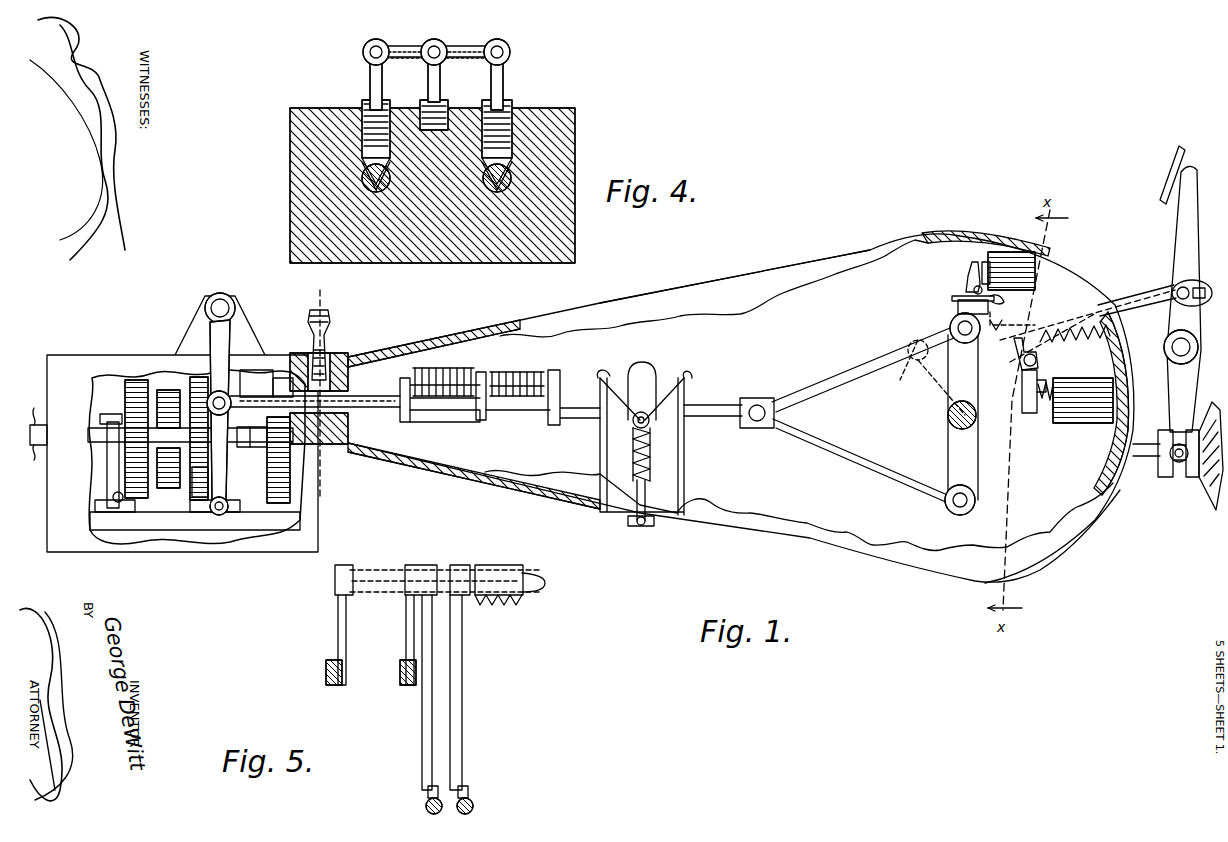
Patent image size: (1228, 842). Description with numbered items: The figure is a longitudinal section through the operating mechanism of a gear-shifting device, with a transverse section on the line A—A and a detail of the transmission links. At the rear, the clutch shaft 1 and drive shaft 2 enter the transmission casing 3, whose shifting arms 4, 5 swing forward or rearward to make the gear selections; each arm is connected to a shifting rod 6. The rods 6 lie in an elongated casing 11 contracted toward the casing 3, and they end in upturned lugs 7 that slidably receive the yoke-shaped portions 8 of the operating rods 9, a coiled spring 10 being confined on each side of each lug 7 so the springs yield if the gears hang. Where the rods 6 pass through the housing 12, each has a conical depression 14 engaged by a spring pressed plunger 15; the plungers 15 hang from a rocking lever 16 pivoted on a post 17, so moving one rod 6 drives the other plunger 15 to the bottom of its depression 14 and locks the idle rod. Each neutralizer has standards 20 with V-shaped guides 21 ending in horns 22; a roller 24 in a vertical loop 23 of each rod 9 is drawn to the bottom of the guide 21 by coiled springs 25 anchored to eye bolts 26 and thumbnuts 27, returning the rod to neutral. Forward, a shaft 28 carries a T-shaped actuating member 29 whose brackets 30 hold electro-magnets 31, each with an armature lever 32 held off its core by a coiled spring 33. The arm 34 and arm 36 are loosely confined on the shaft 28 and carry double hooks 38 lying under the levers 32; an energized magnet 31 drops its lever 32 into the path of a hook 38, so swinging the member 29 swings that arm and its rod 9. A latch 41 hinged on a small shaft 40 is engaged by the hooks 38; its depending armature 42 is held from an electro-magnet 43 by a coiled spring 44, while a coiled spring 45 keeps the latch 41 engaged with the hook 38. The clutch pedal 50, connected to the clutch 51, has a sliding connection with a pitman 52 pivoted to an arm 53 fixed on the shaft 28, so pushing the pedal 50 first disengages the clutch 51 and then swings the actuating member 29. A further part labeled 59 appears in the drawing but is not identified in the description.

In FIG. 1, the clutch shaft 1 is at (1150, 445).
In FIG. 1, the drive shaft 2 is at (34, 415).
In FIG. 1, the transmission casing 3 is at (80, 356).
In FIG. 1, the transmission shifting arm 4 is at (226, 337).
In FIG. 5, the transmission shifting arm 4 is at (336, 624).
In FIG. 5, the transmission shifting arm 5 is at (404, 624).
In FIG. 1, the shifting rod 6 is at (370, 400).
In FIG. 5, the shifting rod 6 is at (326, 676).
In FIG. 1, the upturned lug 7 is at (486, 376).
In FIG. 1, the yoke-shaped portion 8 is at (572, 380).
In FIG. 1, the operating rod 9 is at (720, 400).
In FIG. 1, the coiled spring 10 is at (448, 376).
In FIG. 1, the elongated casing 11 is at (776, 272).
In FIG. 4, the housing 12 is at (290, 112).
In FIG. 4, the conical depression 14 is at (362, 176).
In FIG. 4, the spring pressed plunger 15 is at (505, 80).
In FIG. 4, the rocking lever 16 is at (470, 46).
In FIG. 4, the post 17 is at (440, 85).
In FIG. 1, the standard 20 is at (690, 452).
In FIG. 1, the V-shaped guide 21 is at (612, 380).
In FIG. 1, the horn 22 is at (690, 378).
In FIG. 1, the vertical loop 23 is at (650, 368).
In FIG. 1, the roller 24 is at (641, 410).
In FIG. 1, the coiled spring 25 is at (632, 440).
In FIG. 1, the eye bolt 26 is at (646, 490).
In FIG. 1, the thumbnut 27 is at (630, 524).
In FIG. 1, the shaft 28 is at (946, 420).
In FIG. 1, the T-shaped actuating member 29 is at (958, 305).
In FIG. 1, the bracket 30 is at (1036, 328).
In FIG. 1, the electro-magnet 31 is at (1004, 258).
In FIG. 1, the armature lever 32 is at (972, 266).
In FIG. 1, the coiled spring 33 is at (984, 262).
In FIG. 1, the arm 34 is at (963, 346).
In FIG. 1, the arm 36 is at (948, 459).
In FIG. 1, the double hook 38 is at (996, 328).
In FIG. 1, the small shaft 40 is at (1040, 362).
In FIG. 1, the latch 41 is at (1022, 372).
In FIG. 1, the depending armature 42 is at (1022, 388).
In FIG. 1, the electro-magnet 43 is at (1088, 424).
In FIG. 1, the coiled spring 44 is at (1040, 416).
In FIG. 1, the coiled spring 45 is at (1086, 344).
In FIG. 1, the clutch pedal 50 is at (1172, 236).
In FIG. 1, the clutch 51 is at (1204, 486).
In FIG. 1, the pitman 52 is at (1146, 304).
In FIG. 1, the arm 53 is at (914, 375).
In FIG. 1, the triangular frame arm 59 is at (842, 430).
In FIG. 1, the section line A— A is at (319, 387).